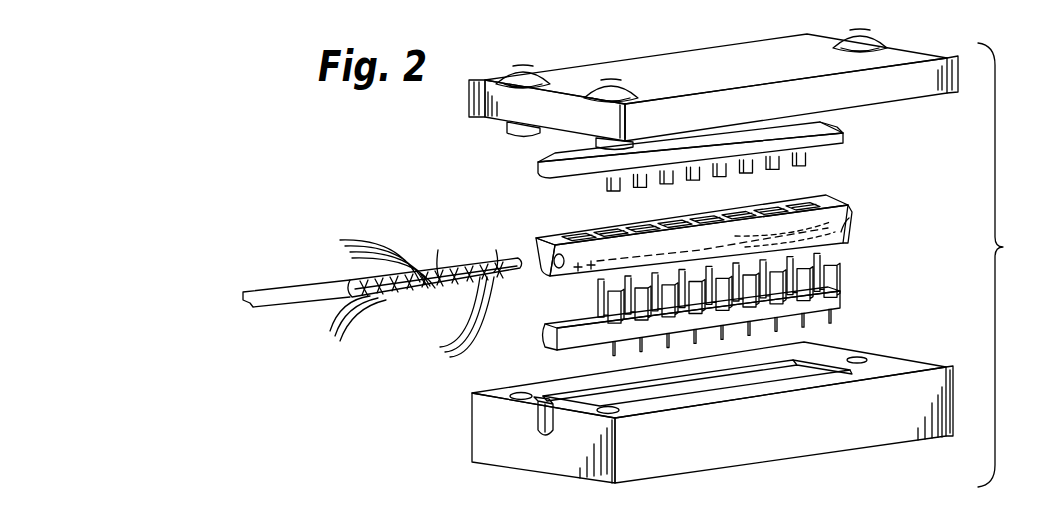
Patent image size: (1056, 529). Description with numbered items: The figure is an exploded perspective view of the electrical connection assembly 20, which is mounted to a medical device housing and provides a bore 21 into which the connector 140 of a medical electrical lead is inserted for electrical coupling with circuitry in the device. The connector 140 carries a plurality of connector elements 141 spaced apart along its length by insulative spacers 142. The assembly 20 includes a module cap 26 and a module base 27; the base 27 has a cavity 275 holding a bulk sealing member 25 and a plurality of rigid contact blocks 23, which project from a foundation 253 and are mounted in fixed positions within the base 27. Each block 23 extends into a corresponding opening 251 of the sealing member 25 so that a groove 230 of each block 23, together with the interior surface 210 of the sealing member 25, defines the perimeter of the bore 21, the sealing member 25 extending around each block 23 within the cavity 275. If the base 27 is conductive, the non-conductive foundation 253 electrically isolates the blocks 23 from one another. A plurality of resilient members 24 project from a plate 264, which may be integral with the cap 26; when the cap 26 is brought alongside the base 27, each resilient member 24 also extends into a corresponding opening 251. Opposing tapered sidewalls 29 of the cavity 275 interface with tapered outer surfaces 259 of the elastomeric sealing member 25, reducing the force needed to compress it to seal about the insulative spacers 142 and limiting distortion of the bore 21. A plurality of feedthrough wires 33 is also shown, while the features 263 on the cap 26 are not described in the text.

The electrical connection assembly 20 is at (1006, 265).
The bore 21 is at (536, 236).
The rigid contact blocks 23 is at (598, 290).
The resilient members 24 is at (666, 184).
The bulk sealing member 25 is at (849, 218).
The module cap 26 is at (714, 62).
The module base 27 is at (527, 458).
The tapered sidewalls 29 is at (630, 396).
The feedthrough wires 33 is at (641, 350).
The connector 140 is at (362, 208).
The connector elements 141 is at (335, 336).
The insulative spacers 142 is at (350, 252).
The interior surface 210 is at (553, 266).
The groove 230 is at (604, 300).
The opening 251 is at (605, 234).
The foundation 253 is at (553, 332).
The tapered outer surfaces 259 is at (845, 238).
The posts 263 is at (528, 68).
The plate 264 is at (540, 170).
The cavity 275 is at (700, 374).